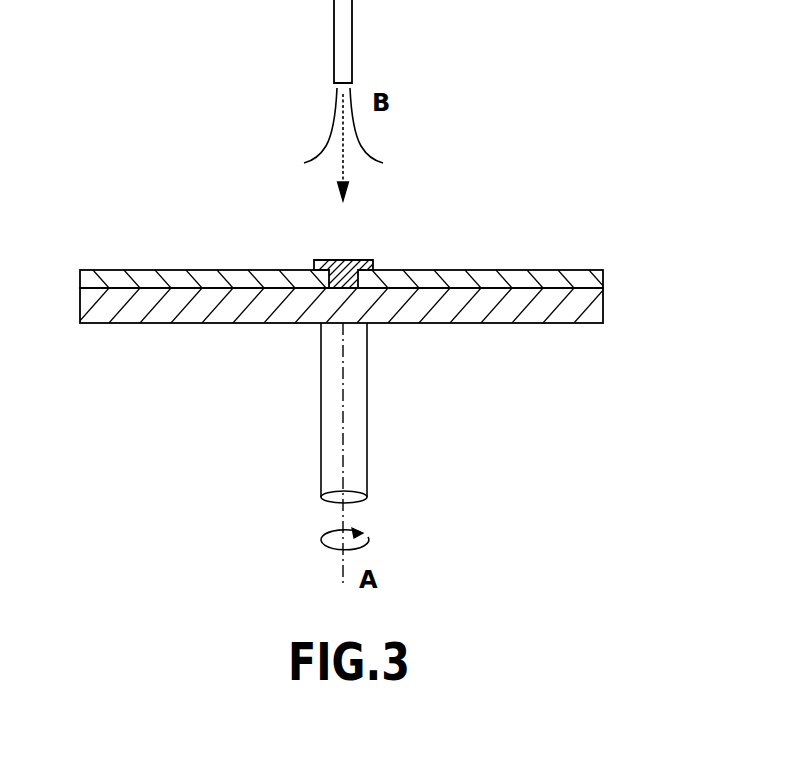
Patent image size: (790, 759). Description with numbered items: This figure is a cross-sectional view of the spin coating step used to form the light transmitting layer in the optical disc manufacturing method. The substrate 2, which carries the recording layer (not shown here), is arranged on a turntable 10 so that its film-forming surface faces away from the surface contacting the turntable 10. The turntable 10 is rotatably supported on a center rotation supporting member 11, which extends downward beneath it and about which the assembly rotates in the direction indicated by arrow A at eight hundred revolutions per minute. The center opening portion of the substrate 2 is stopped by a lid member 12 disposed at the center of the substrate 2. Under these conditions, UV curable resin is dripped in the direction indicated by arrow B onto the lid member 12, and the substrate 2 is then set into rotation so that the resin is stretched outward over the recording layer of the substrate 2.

The substrate 2 is at (590, 282).
The turntable 10 is at (590, 313).
The center rotation supporting member 11 is at (358, 408).
The lid member 12 is at (374, 262).